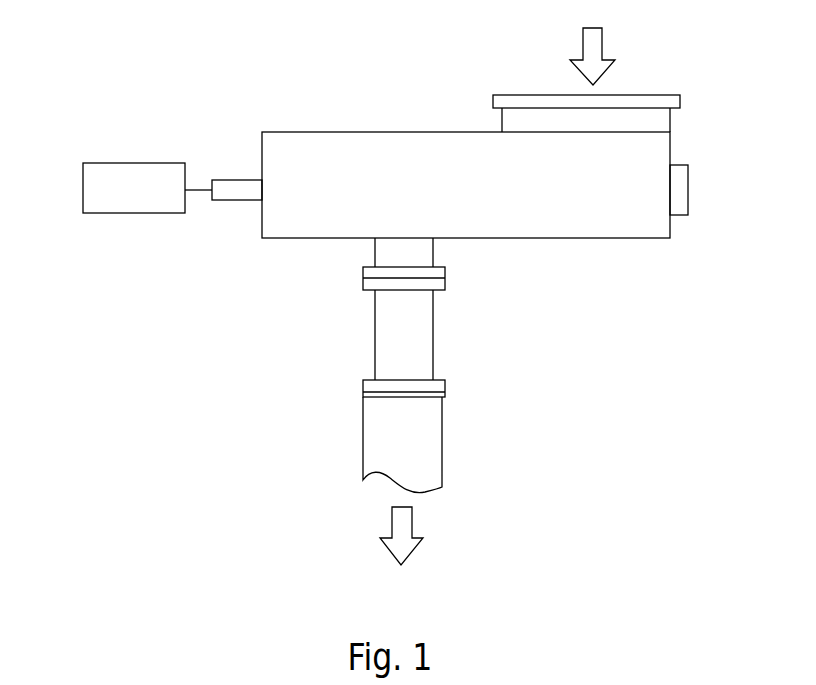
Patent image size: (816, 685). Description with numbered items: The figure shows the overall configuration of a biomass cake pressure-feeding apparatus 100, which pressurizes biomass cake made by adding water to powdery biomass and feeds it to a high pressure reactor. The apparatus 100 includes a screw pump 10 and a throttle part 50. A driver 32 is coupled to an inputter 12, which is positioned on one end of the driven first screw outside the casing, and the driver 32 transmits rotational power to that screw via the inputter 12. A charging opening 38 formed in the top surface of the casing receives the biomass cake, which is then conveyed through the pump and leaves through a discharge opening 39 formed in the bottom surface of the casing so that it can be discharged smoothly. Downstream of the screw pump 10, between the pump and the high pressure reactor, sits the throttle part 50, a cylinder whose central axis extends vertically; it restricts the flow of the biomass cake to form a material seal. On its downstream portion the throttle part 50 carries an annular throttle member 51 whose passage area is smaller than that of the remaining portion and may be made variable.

The biomass cake pressure-feeding apparatus 100 is at (240, 67).
The screw pump 10 is at (377, 130).
The inputter 12 is at (228, 178).
The driver 32 is at (134, 163).
The charging opening 38 is at (630, 93).
The discharge opening 39 is at (395, 280).
The throttle part 50 is at (425, 330).
The throttle member 51 is at (427, 395).